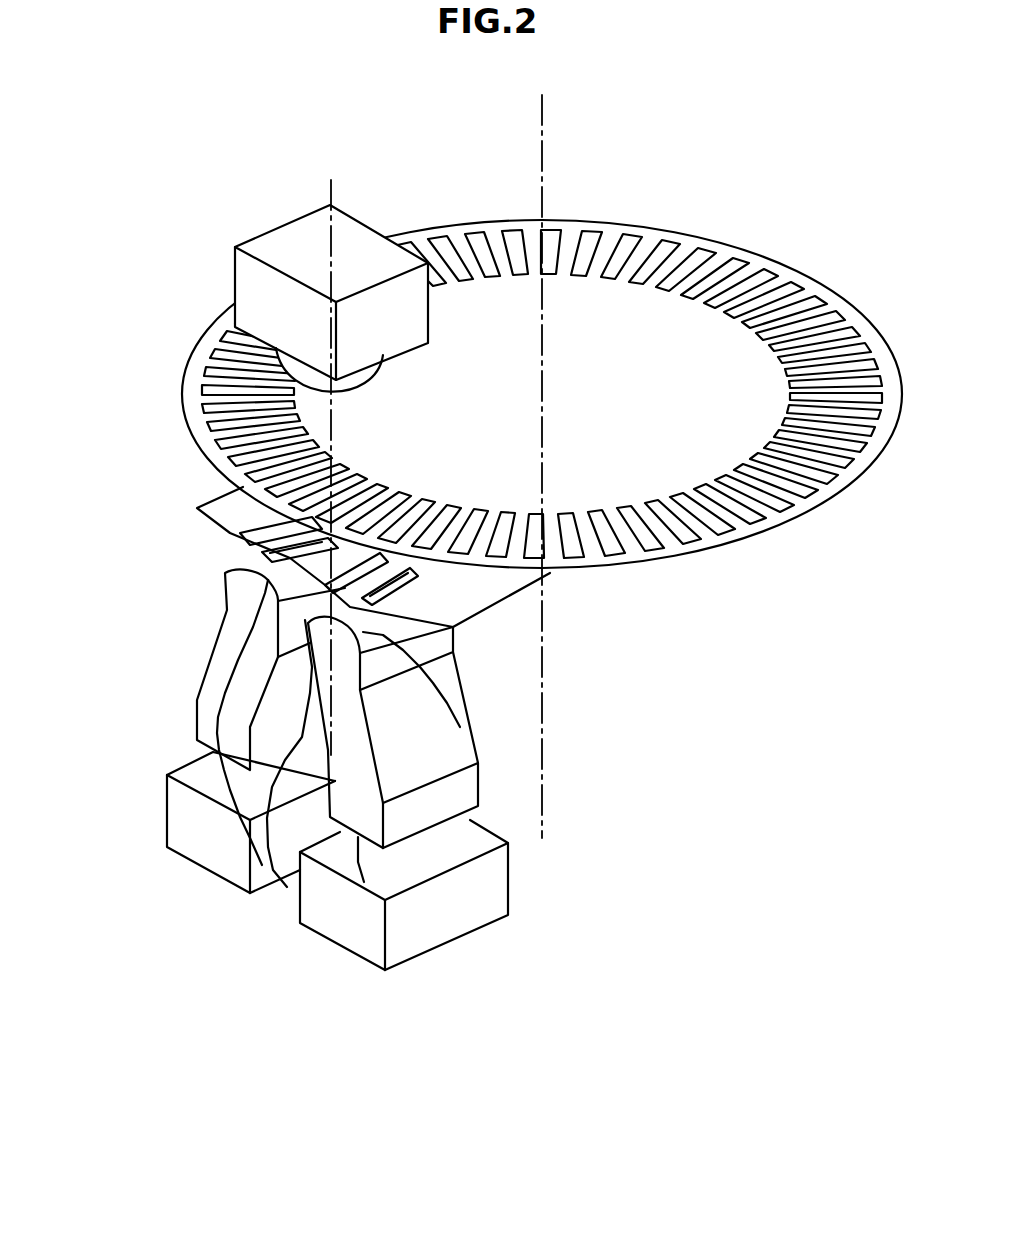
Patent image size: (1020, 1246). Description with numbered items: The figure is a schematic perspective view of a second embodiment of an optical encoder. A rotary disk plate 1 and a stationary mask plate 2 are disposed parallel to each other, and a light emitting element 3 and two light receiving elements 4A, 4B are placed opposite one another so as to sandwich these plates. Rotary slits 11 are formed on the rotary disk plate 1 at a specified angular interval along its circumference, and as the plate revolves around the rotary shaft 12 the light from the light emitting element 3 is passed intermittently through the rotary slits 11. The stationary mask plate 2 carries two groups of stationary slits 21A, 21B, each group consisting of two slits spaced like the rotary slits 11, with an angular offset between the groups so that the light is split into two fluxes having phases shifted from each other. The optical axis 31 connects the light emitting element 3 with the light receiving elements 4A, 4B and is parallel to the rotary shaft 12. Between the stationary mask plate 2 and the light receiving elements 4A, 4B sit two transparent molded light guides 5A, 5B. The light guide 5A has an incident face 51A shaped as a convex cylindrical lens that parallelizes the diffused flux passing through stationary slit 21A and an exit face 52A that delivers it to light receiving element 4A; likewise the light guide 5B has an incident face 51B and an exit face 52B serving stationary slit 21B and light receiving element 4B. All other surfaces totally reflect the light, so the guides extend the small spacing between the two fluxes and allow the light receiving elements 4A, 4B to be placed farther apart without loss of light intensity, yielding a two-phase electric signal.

The rotary disk plate 1 is at (678, 234).
The rotary slits 11 is at (760, 272).
The rotary shaft 12 is at (546, 116).
The stationary mask plate 2 is at (210, 497).
The stationary slit 21A is at (228, 528).
The stationary slit 21B is at (375, 605).
The light emitting element 3 is at (282, 236).
The optical axis 31 is at (336, 186).
The light receiving element 4A is at (167, 812).
The light receiving element 4B is at (453, 940).
The light guide 5A is at (203, 673).
The light guide 5B is at (471, 708).
The incident face 51A is at (262, 865).
The exit face 52A is at (287, 887).
The incident face 51B is at (460, 727).
The exit face 52B is at (364, 882).